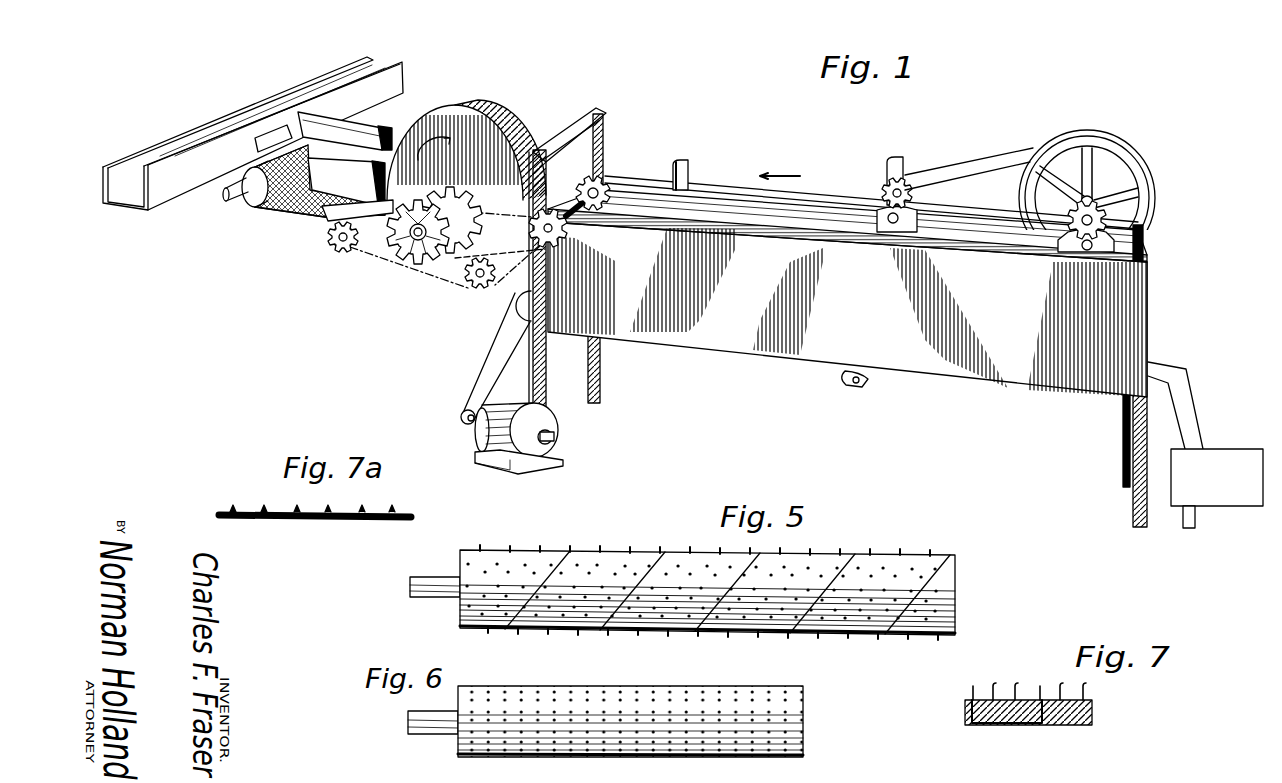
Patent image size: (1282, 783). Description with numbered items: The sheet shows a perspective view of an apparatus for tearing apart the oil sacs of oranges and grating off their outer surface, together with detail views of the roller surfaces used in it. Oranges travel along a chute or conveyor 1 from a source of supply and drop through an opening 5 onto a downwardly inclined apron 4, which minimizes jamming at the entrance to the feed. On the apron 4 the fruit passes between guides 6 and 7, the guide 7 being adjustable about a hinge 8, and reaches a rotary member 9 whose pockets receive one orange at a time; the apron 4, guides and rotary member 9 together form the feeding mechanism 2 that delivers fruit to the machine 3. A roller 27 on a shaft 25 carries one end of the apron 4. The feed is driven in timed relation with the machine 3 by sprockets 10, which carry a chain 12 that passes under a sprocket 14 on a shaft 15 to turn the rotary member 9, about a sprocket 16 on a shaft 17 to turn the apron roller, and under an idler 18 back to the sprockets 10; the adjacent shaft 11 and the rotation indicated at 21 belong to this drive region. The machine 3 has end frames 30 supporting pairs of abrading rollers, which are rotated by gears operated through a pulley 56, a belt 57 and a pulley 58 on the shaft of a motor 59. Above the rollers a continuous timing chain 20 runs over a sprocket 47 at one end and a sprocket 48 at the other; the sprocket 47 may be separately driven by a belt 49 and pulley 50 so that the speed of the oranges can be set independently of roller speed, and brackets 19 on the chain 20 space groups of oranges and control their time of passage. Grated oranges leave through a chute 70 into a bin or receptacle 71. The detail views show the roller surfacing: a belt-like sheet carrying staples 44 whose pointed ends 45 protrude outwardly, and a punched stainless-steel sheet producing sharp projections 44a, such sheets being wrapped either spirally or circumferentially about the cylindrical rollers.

In FIG. 1, the chute or conveyor 1 is at (158, 207).
In FIG. 1, the feeding mechanism 2 is at (477, 87).
In FIG. 1, the machine 3 is at (715, 357).
In FIG. 1, the apron 4 is at (278, 215).
In FIG. 1, the opening 5 is at (266, 138).
In FIG. 1, the guide 6 is at (380, 140).
In FIG. 1, the guide 7 is at (346, 182).
In FIG. 1, the hinge 8 is at (374, 173).
In FIG. 1, the rotary member 9 is at (490, 120).
In FIG. 1, the sprockets 10 is at (568, 234).
In FIG. 1, the shaft 11 is at (588, 216).
In FIG. 1, the chain 12 is at (512, 226).
In FIG. 1, the sprocket 14 is at (446, 262).
In FIG. 1, the shaft 15 is at (412, 240).
In FIG. 1, the sprocket 16 is at (350, 254).
In FIG. 1, the shaft 17 is at (338, 242).
In FIG. 1, the idler 18 is at (478, 286).
In FIG. 1, the brackets 19 is at (688, 162).
In FIG. 1, the chain 20 is at (840, 160).
In FIG. 1, the rotation arrow 21 is at (435, 156).
In FIG. 1, the shaft 25 is at (228, 198).
In FIG. 1, the roller 27 is at (250, 200).
In FIG. 1, the end frames 30 is at (546, 356).
In FIG. 7, the staples 44 is at (1008, 728).
In FIG. 7A, the sharp projections 44a is at (393, 509).
In FIG. 7, the protruding ends of staples 45 is at (996, 694).
In FIG. 1, the sprocket 47 is at (1096, 228).
In FIG. 1, the sprocket 48 is at (600, 185).
In FIG. 1, the belt 49 is at (1004, 178).
In FIG. 1, the pulley 50 is at (1105, 150).
In FIG. 1, the pulley 56 is at (514, 303).
In FIG. 1, the belt 57 is at (482, 358).
In FIG. 1, the pulley 58 is at (466, 423).
In FIG. 1, the motor 59 is at (510, 457).
In FIG. 1, the chute 70 is at (1190, 399).
In FIG. 1, the bin or receptacle 71 is at (1228, 458).